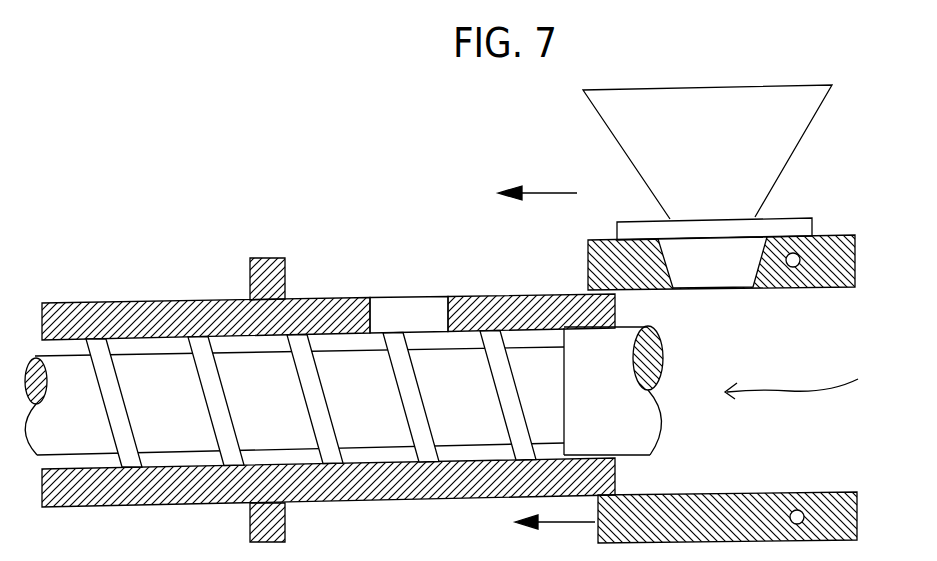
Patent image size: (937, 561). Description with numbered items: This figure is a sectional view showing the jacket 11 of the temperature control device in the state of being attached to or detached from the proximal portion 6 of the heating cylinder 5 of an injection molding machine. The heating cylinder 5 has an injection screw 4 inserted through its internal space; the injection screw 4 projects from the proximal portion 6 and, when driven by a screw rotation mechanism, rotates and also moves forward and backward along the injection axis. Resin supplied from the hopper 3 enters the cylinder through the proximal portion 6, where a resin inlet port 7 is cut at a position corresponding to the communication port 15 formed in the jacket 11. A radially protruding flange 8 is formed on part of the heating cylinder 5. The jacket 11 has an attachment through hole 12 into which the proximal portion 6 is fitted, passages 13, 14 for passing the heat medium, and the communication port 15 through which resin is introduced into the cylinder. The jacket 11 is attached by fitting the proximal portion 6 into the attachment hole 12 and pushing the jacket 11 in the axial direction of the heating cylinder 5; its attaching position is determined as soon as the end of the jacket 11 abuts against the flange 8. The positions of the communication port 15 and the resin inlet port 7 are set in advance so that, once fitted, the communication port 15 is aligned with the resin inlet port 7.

The hopper 3 is at (700, 133).
The injection screw 4 is at (82, 383).
The heating cylinder 5 is at (158, 300).
The proximal portion 6 is at (490, 297).
The resin inlet port 7 is at (403, 317).
The flange 8 is at (277, 265).
The jacket 11 is at (848, 235).
The attachment through hole 12 is at (810, 381).
The passage 13 is at (793, 268).
The passage 14 is at (797, 508).
The communication port 15 is at (722, 278).